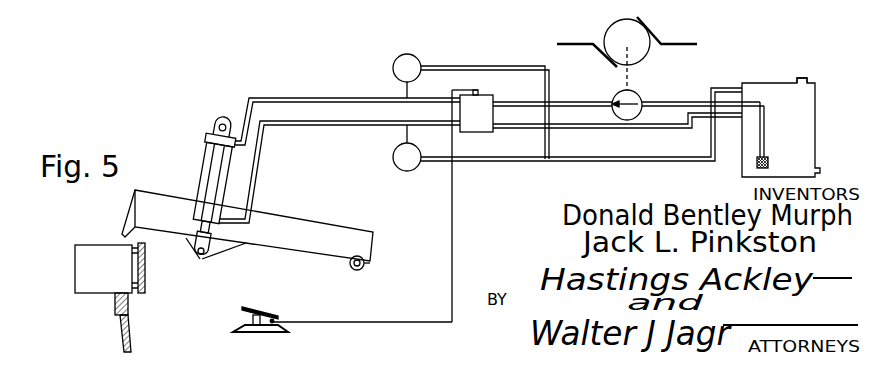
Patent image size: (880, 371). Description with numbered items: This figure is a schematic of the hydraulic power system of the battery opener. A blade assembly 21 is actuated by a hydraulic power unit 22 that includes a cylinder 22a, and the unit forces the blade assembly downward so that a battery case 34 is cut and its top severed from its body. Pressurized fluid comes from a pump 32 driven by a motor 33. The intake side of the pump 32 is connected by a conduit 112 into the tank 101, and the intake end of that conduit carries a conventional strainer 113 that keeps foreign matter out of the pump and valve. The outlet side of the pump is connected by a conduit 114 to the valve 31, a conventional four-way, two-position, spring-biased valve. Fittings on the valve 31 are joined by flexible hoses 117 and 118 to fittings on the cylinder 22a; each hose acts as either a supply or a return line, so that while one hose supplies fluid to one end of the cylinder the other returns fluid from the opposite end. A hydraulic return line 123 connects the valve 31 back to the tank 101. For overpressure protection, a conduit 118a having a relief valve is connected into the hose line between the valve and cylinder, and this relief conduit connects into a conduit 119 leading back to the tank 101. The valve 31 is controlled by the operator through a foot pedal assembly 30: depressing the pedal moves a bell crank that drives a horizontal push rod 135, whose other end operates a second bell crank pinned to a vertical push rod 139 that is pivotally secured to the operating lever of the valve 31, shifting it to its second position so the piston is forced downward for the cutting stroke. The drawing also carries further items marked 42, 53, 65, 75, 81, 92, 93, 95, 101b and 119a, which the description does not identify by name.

The blade assembly 21 is at (326, 194).
The hydraulic power unit 22 is at (194, 150).
The cylinder 22a is at (212, 138).
The foot pedal assembly 30 is at (238, 312).
The valve 31 is at (476, 133).
The pump 32 is at (641, 97).
The motor 33 is at (612, 33).
The battery case 34 is at (76, 251).
The bracket 42 is at (134, 201).
The roller 53 is at (365, 263).
The post 65 is at (115, 301).
The plate 75 is at (146, 274).
The connectors 81 is at (134, 297).
The piston rod 92 is at (197, 226).
The rod end 93 is at (187, 237).
The pivot bracket 95 is at (218, 250).
The tank 101 is at (808, 133).
The tank vent 101b is at (802, 79).
The conduit 112 is at (768, 122).
The strainer 113 is at (769, 163).
The conduit 114 is at (594, 102).
The flexible hose 117 is at (323, 97).
The flexible hose 118 is at (296, 126).
The conduit 118a is at (394, 65).
The conduit 119 is at (486, 162).
The relief valve 119a is at (412, 170).
The hydraulic return line 123 is at (571, 127).
The horizontal push rod 135 is at (360, 322).
The vertical push rod 139 is at (450, 212).